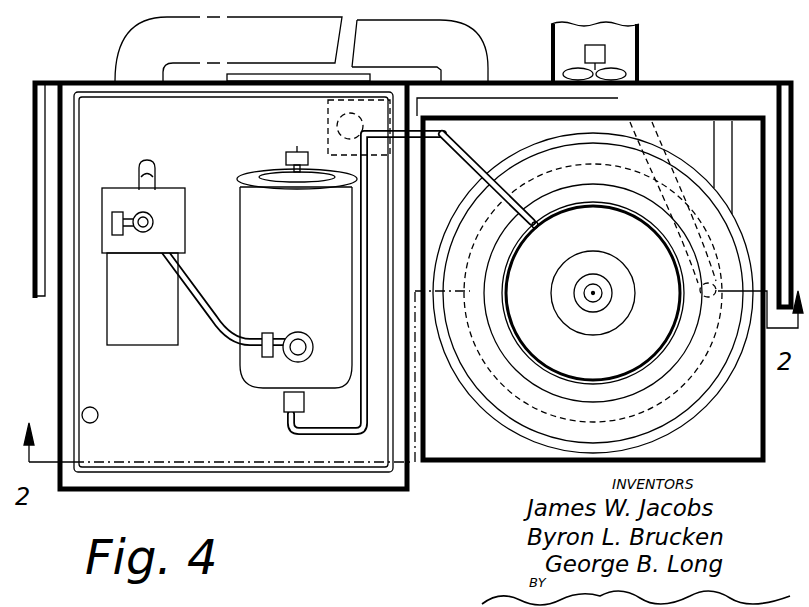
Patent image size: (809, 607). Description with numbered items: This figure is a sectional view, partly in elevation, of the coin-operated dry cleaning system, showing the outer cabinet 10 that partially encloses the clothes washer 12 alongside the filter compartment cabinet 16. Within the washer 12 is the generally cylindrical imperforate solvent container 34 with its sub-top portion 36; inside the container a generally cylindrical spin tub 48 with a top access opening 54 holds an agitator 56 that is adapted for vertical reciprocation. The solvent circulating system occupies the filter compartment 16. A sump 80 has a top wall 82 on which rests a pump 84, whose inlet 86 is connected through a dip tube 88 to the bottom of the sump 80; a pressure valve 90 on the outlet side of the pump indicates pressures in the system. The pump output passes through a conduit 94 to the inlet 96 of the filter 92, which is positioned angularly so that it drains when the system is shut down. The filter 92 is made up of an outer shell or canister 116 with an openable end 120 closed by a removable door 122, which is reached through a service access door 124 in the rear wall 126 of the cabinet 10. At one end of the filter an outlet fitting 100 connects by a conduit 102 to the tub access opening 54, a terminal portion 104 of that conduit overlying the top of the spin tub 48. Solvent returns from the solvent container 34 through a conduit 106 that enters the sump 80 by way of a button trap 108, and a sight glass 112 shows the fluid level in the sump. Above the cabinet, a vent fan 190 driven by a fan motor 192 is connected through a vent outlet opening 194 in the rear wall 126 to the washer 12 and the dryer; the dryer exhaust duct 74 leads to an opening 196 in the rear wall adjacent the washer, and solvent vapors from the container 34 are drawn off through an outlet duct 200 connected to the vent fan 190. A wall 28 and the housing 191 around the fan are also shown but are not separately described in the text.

The outer cabinet 10 is at (42, 80).
The clothes washer 12 is at (445, 462).
The filter compartment cabinet 16 is at (55, 360).
The inner side wall 28 is at (797, 108).
The solvent container 34 is at (465, 393).
The sub-top portion 36 is at (730, 407).
The spin tub 48 is at (533, 167).
The top access opening 54 is at (547, 378).
The agitator 56 is at (617, 271).
The exhaust duct 74 is at (450, 36).
The sump 80 is at (180, 92).
The sump top wall 82 is at (107, 108).
The pump 84 is at (152, 346).
The pump inlet 86 is at (140, 183).
The dip tube 88 is at (152, 163).
The pressure valve 90 is at (117, 212).
The filter 92 is at (240, 263).
The conduit 94 is at (213, 323).
The filter inlet 96 is at (287, 353).
The outlet fitting 100 is at (282, 408).
The conduit 102 is at (337, 433).
The terminal portion 104 is at (537, 225).
The conduit 106 is at (677, 193).
The button trap 108 is at (328, 117).
The sight glass 112 is at (93, 407).
The canister 116 is at (250, 218).
The openable end 120 is at (268, 174).
The removable door 122 is at (283, 163).
The service access door 124 is at (252, 73).
The rear wall 126 is at (718, 88).
The vent fan 190 is at (611, 72).
The fan housing 191 is at (640, 33).
The fan motor 192 is at (602, 50).
The vent outlet opening 194 is at (607, 89).
The opening 196 is at (490, 63).
The outlet duct 200 is at (727, 147).